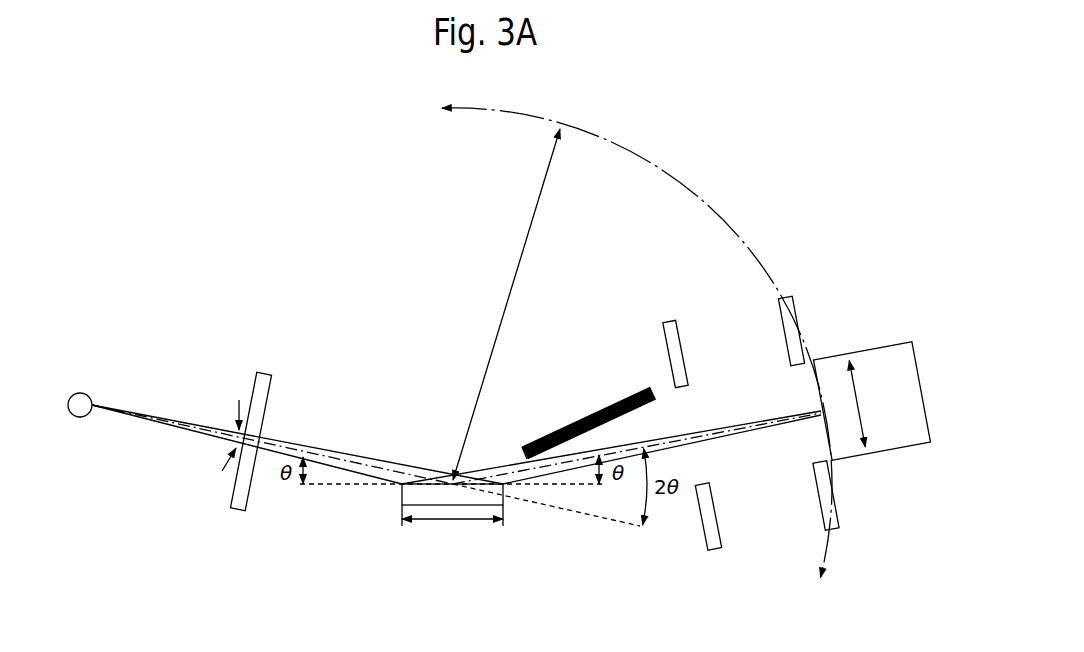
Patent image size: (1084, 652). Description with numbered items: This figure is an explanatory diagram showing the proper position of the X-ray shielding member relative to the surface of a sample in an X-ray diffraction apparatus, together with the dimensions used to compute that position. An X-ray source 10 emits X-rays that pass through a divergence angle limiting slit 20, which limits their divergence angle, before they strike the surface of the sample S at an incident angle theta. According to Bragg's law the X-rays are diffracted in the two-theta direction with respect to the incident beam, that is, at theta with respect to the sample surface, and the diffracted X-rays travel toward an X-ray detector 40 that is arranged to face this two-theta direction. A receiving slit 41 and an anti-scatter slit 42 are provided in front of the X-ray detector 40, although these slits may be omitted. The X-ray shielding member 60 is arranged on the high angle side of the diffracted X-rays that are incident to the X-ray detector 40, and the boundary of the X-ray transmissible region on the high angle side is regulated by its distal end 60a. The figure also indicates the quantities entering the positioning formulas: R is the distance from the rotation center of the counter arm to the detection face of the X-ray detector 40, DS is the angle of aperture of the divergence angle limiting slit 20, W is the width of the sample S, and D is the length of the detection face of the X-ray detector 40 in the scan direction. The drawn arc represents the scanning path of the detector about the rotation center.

The X-ray source 10 is at (82, 393).
The divergence angle limiting slit 20 is at (268, 372).
The X-ray detector 40 is at (880, 346).
The receiving slit 41 is at (797, 303).
The anti-scatter slit 42 is at (670, 321).
The X-ray shielding member 60 is at (588, 410).
The distal end of the X-ray shielding member 60a is at (520, 451).
The sample S is at (401, 492).
The width of sample W is at (452, 528).
The length of the detection face of the X-ray detector D is at (868, 403).
The angle of aperture of the divergence angle limiting slit DS is at (214, 444).
The distance from the rotation center of the counter arm to the detection face of th R is at (506, 304).